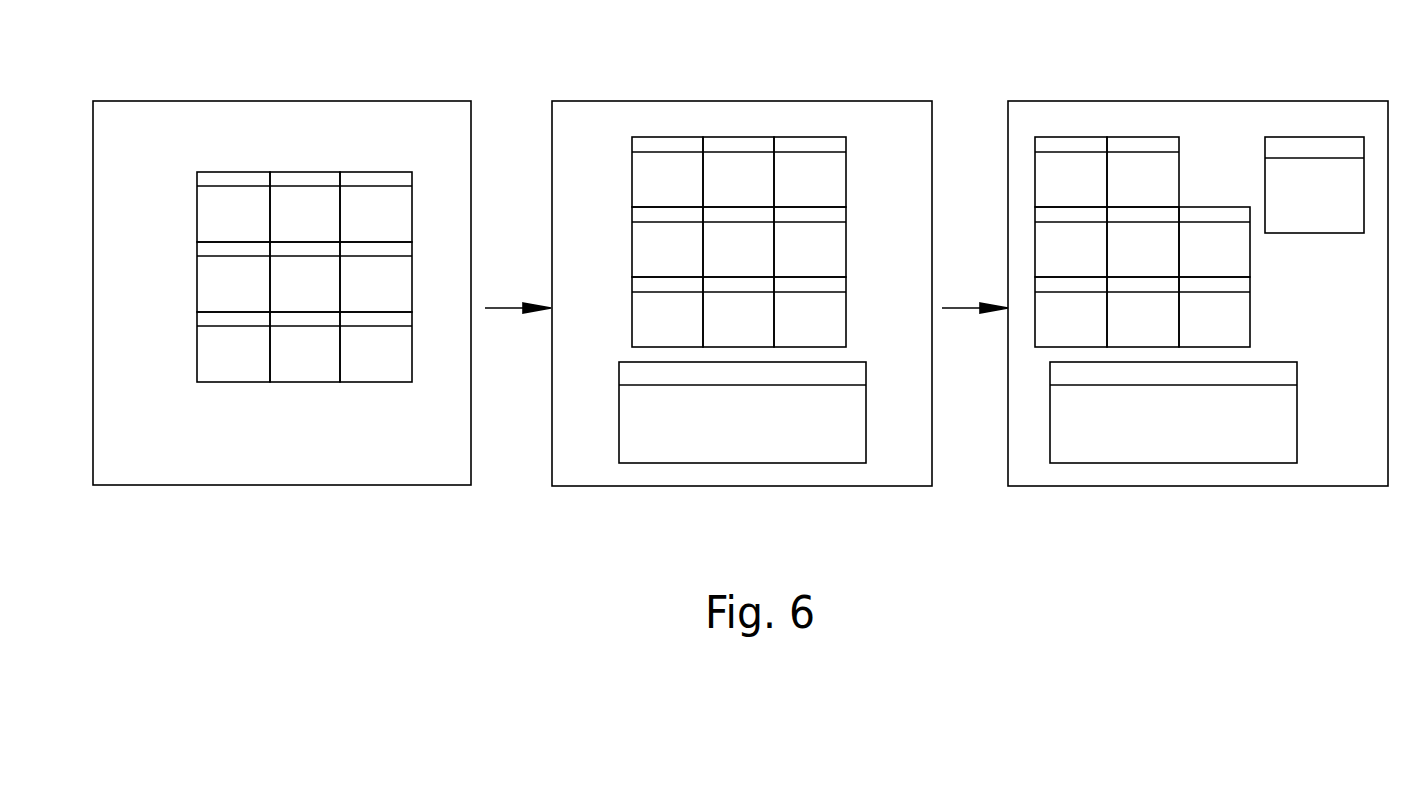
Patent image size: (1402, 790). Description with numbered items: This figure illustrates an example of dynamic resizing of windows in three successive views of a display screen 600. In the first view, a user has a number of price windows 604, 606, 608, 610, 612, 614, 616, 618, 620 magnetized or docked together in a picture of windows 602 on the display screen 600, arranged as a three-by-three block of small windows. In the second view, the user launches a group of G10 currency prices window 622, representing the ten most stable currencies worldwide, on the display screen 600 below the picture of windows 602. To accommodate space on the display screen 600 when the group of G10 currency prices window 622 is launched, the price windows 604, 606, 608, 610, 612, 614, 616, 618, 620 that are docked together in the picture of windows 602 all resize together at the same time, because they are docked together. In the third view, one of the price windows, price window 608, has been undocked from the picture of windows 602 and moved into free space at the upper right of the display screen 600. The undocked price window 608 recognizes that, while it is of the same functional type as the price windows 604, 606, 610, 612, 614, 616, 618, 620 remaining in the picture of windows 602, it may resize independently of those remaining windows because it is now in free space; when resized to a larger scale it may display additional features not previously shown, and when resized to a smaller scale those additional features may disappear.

The display screen 600 is at (338, 100).
The picture of windows 602 is at (368, 145).
The price window 604 is at (214, 219).
The price window 606 is at (286, 217).
The price window 608 is at (357, 217).
The price window 610 is at (214, 289).
The price window 612 is at (286, 287).
The price window 614 is at (357, 287).
The price window 616 is at (214, 359).
The price window 618 is at (286, 357).
The price window 620 is at (357, 357).
The group of G10 currency prices window 622 is at (720, 429).